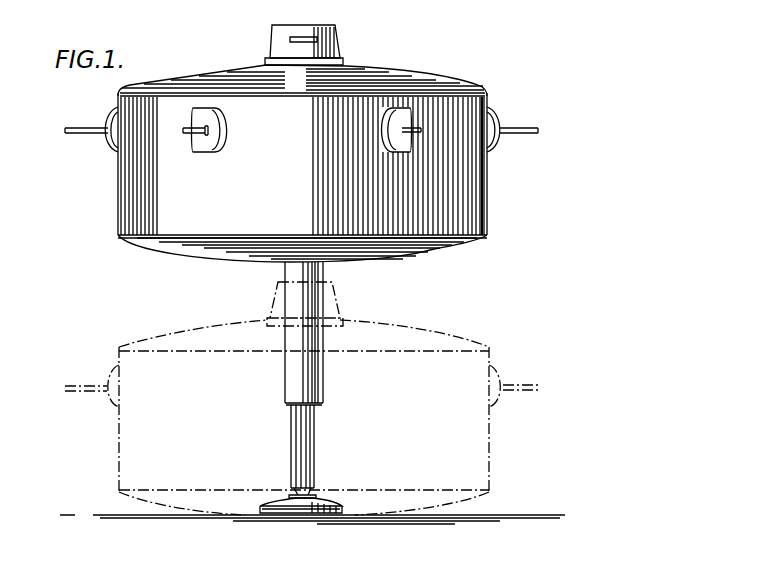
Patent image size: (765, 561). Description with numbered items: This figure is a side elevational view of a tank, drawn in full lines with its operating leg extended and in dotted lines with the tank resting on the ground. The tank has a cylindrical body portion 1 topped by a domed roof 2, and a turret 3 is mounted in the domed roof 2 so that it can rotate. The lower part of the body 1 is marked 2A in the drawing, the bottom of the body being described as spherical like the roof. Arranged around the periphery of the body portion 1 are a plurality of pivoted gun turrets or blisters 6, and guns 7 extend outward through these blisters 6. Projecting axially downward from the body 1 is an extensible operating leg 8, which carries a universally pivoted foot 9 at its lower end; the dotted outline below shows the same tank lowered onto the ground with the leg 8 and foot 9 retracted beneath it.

The cylindrical body portion 1 is at (501, 191).
The domed roof 2 is at (438, 76).
The bottom wall 2A is at (399, 257).
The turret 3 is at (337, 48).
The pivoted gun turrets or blisters 6 is at (107, 148).
The guns 7 is at (82, 128).
The extensible operating leg 8 is at (331, 498).
The universally pivoted foot 9 is at (327, 391).